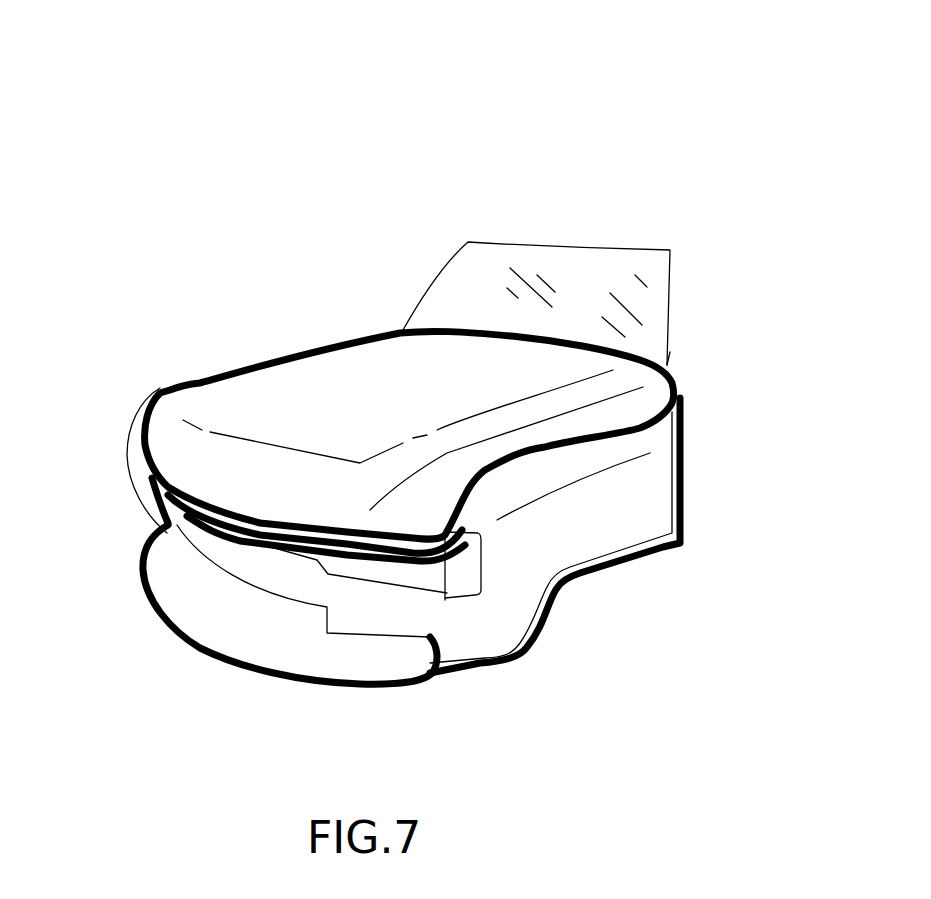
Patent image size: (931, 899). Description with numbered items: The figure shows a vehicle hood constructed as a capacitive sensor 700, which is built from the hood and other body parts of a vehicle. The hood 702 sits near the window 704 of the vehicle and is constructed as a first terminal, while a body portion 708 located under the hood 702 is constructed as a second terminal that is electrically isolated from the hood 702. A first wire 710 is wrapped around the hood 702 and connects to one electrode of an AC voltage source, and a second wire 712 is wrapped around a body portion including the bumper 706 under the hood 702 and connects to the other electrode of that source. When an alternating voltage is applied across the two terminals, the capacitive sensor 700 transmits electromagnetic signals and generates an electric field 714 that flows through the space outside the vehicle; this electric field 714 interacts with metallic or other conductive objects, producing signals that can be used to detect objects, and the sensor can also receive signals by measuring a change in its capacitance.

The capacitive sensor 700 is at (653, 112).
The hood 702 is at (310, 397).
The window 704 is at (528, 271).
The bumper 706 is at (272, 567).
The body portion 708 is at (633, 487).
The first wire 710 is at (270, 416).
The second wire 712 is at (155, 596).
The electric field 714 is at (160, 390).